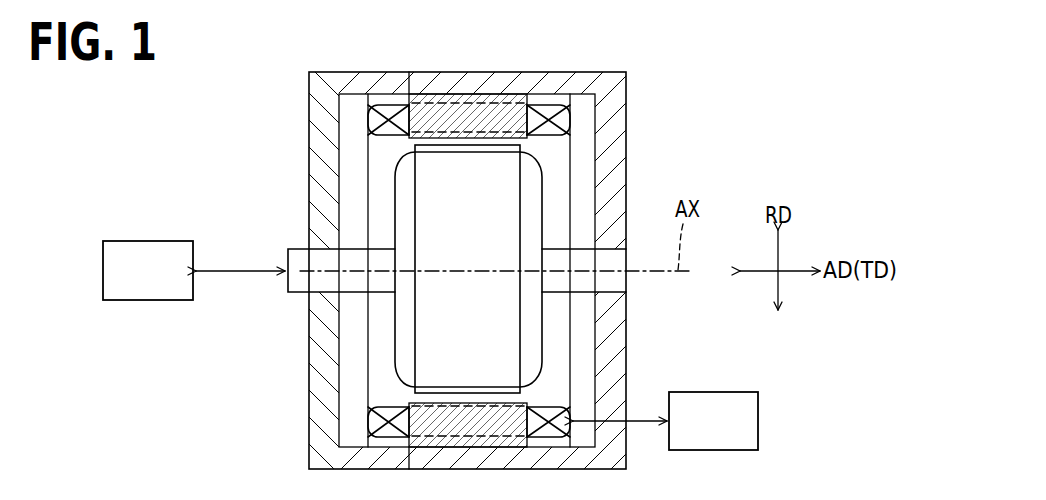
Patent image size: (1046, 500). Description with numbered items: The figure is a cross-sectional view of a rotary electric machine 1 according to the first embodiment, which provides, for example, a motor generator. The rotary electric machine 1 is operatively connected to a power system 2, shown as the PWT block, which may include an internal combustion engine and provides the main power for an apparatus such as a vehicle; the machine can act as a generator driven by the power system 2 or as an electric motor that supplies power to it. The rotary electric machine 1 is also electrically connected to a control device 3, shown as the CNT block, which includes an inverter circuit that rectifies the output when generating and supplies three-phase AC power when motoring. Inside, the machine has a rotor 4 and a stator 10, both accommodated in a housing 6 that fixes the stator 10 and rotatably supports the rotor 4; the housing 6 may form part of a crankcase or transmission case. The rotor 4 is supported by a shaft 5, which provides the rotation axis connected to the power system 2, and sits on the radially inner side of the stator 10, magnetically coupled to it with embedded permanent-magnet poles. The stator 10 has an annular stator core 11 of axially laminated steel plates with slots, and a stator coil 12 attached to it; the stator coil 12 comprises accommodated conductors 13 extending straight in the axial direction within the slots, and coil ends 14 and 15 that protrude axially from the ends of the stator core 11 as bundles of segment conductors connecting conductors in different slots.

The rotary electric machine 1 is at (648, 82).
The power system 2 is at (143, 241).
The control device 3 is at (700, 392).
The rotor 4 is at (393, 181).
The shaft 5 is at (298, 248).
The housing 6 is at (310, 326).
The stator 10 is at (356, 114).
The stator core 11 is at (432, 94).
The stator coil 12 is at (366, 105).
The accommodated conductors 13 is at (497, 103).
The coil end 14 is at (553, 106).
The coil end 15 is at (378, 106).